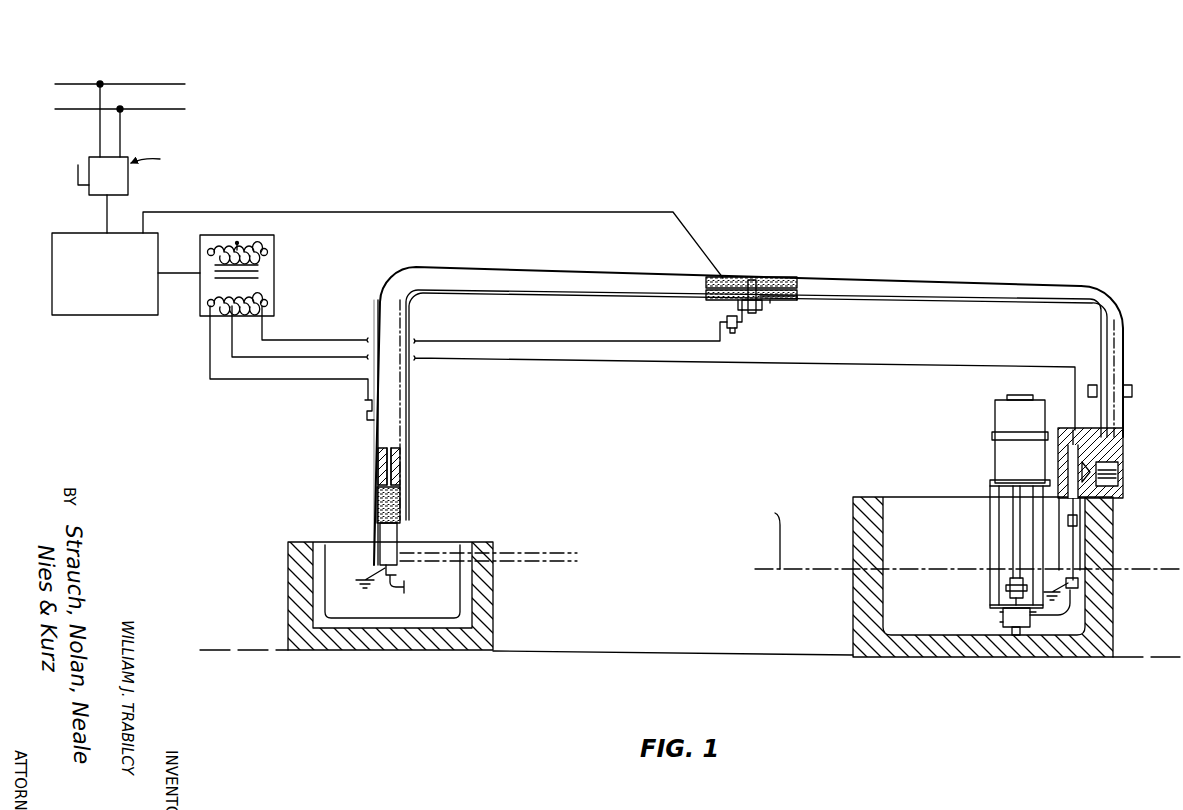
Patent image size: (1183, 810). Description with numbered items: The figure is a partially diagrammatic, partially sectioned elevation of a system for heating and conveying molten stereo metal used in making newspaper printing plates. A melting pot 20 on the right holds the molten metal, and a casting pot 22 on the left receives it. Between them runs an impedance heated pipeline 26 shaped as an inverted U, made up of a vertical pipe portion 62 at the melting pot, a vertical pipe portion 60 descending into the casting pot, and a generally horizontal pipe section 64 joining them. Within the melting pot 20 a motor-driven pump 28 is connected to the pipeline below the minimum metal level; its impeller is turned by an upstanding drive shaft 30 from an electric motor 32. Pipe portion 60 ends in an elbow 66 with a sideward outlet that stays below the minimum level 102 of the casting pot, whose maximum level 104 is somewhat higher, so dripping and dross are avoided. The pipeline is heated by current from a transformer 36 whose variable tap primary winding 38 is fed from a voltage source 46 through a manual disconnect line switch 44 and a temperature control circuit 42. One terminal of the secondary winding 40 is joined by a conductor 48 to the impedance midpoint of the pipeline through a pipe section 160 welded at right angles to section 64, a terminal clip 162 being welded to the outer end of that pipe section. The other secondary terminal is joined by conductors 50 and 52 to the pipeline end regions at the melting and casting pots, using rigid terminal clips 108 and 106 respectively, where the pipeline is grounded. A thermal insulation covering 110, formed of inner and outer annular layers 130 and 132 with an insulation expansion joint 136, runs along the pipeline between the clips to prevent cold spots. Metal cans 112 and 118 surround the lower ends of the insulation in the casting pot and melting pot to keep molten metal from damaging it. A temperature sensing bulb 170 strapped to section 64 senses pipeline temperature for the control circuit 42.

The melting pot 20 is at (855, 540).
The casting pot 22 is at (493, 632).
The impedance heated pipeline 26 is at (800, 298).
The motor-driven pump 28 is at (1004, 620).
The drive shaft 30 is at (1010, 541).
The electric motor 32 is at (1010, 465).
The transformer 36 is at (263, 265).
The primary winding 38 is at (256, 248).
The secondary winding 40 is at (258, 300).
The temperature control circuit 42 is at (52, 262).
The manual disconnect line switch 44 is at (128, 191).
The voltage source 46 is at (145, 109).
The conductor 48 is at (320, 340).
The conductor 50 is at (284, 357).
The conductor 52 is at (365, 394).
The vertical pipe portion 60 is at (402, 456).
The vertical pipe portion 62 is at (1124, 451).
The horizontal pipe section 64 is at (788, 281).
The elbow 66 is at (394, 587).
The minimum level 102 is at (500, 561).
The maximum level 104 is at (504, 553).
The terminal clip 106 is at (374, 445).
The terminal clip 108 is at (1078, 530).
The thermal insulation covering 110 is at (406, 440).
The metal can 112 is at (400, 527).
The metal can 118 is at (1085, 549).
The inner annular layer 130 is at (786, 302).
The outer annular layer 132 is at (771, 303).
The insulation expansion joint 136 is at (1091, 382).
The pipe section 160 is at (737, 306).
The terminal clip 162 is at (736, 333).
The temperature sensing bulb 170 is at (759, 277).